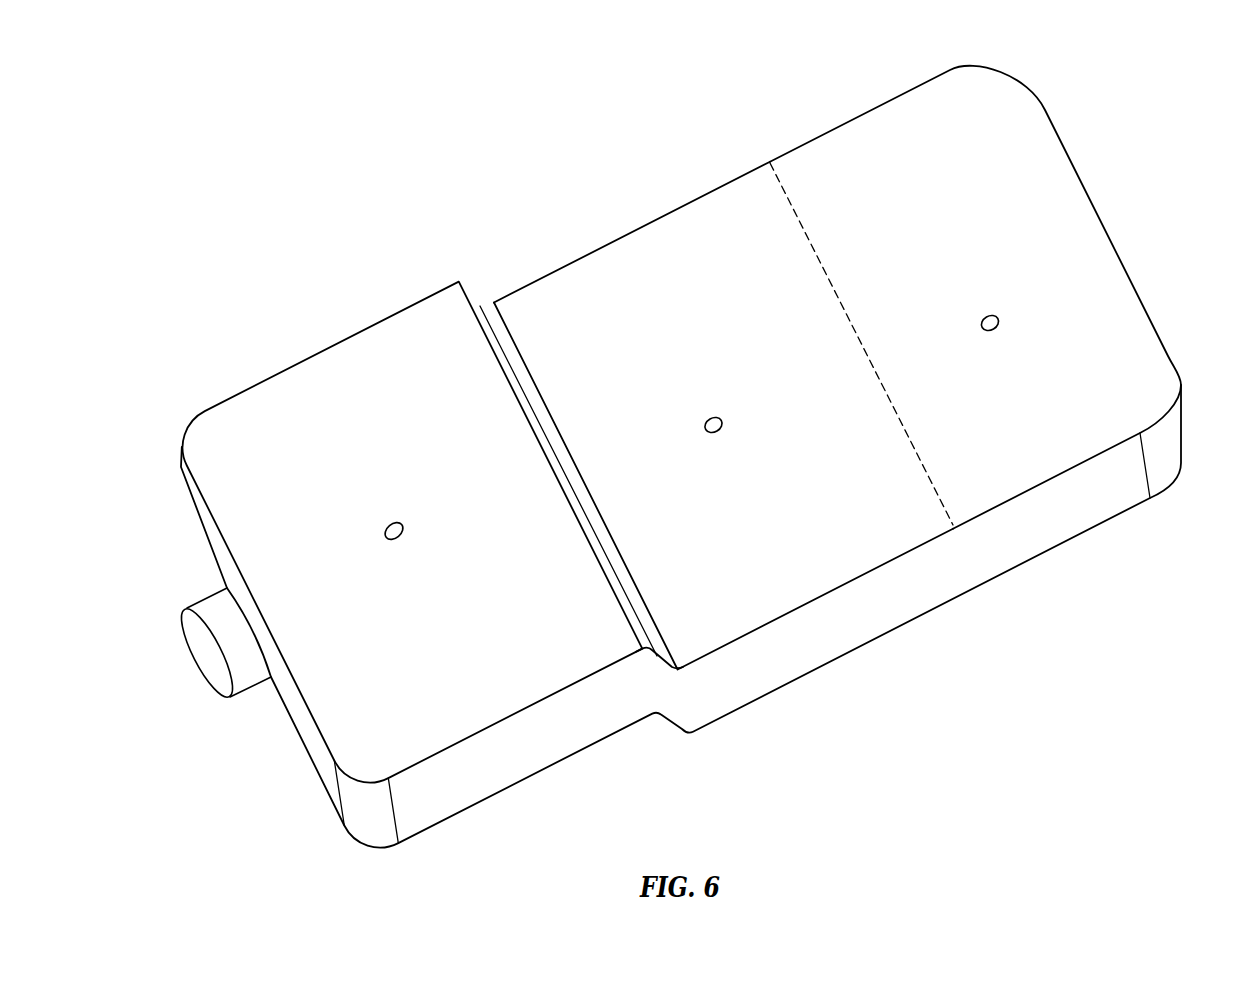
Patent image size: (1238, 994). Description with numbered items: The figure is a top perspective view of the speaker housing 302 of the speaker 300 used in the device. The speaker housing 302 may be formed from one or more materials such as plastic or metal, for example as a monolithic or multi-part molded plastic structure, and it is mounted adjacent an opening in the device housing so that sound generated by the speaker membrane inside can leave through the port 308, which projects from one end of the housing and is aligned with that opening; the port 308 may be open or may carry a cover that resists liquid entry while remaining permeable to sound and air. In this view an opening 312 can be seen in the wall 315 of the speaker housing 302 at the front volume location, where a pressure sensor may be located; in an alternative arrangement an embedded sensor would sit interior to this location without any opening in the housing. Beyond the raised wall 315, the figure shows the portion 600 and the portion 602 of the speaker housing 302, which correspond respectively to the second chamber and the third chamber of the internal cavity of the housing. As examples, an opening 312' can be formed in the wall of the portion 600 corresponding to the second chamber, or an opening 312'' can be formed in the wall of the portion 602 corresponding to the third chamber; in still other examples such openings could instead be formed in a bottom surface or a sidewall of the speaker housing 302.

The speaker 300 is at (352, 120).
The speaker housing 302 is at (844, 648).
The port 308 is at (198, 650).
The opening 312 is at (389, 495).
The opening 312' is at (706, 387).
The opening 312'' is at (981, 286).
The wall 315 is at (293, 381).
The portion 600 is at (598, 283).
The portion 602 is at (883, 137).